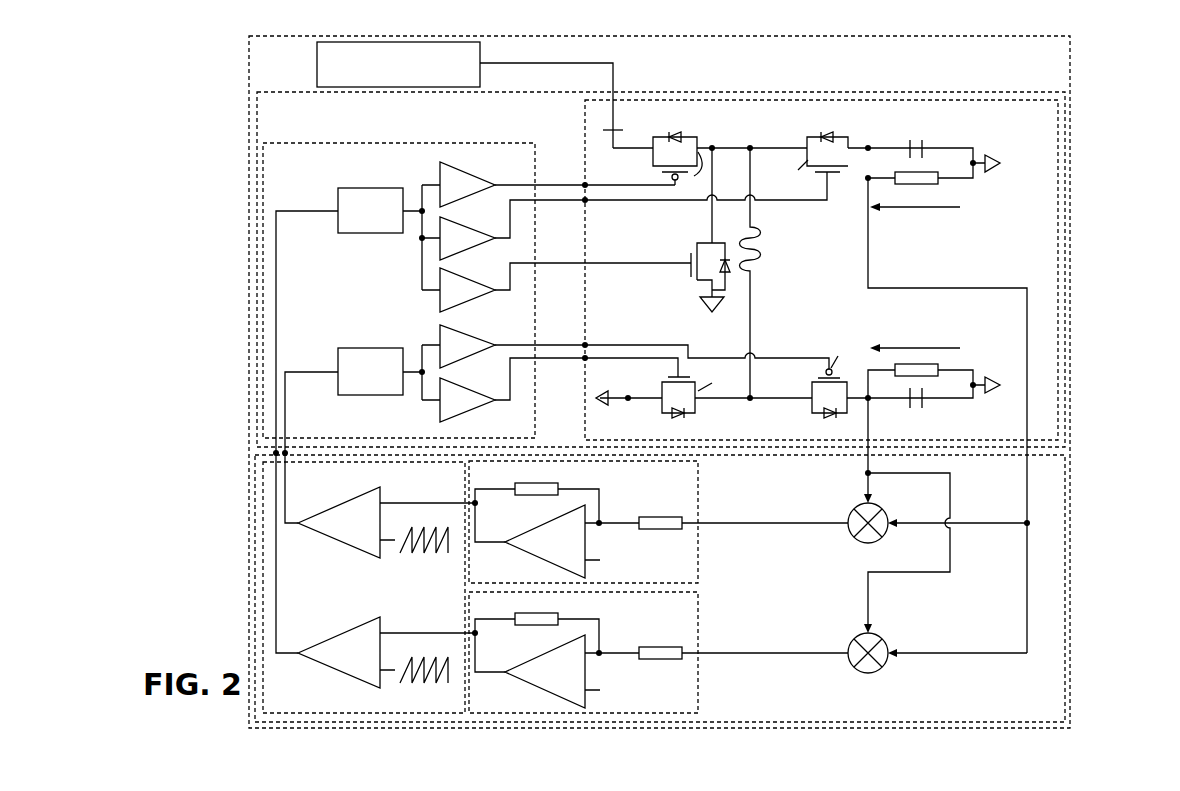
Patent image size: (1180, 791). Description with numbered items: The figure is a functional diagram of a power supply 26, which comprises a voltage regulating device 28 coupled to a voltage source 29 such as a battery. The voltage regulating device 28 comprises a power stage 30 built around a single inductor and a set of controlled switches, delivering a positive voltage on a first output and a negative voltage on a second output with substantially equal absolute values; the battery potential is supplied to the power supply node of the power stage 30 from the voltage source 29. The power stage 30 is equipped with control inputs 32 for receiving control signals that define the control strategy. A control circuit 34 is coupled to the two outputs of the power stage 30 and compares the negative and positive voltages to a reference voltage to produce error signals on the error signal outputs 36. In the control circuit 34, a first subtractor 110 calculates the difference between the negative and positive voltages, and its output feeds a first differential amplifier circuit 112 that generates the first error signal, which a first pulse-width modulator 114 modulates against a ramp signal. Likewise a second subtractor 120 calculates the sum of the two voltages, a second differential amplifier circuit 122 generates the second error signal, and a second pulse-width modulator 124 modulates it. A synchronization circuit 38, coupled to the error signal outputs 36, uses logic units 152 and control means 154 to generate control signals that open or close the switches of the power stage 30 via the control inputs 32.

The power supply 26 is at (250, 72).
The voltage regulating device 28 is at (1021, 92).
The voltage source 29 is at (480, 58).
The power stage 30 is at (1060, 140).
The control inputs 32 is at (583, 181).
The control circuit 34 is at (1067, 490).
The error signal outputs 36 is at (274, 450).
The synchronization circuit 38 is at (262, 176).
The first subtractor 110 is at (850, 531).
The first differential amplifier circuit 112 is at (700, 497).
The first pulse-width modulator 114 is at (323, 535).
The second subtractor 120 is at (850, 644).
The second differential amplifier circuit 122 is at (700, 617).
The second pulse-width modulator 124 is at (345, 631).
The logic units 152 is at (357, 233).
The control means 154 is at (460, 170).